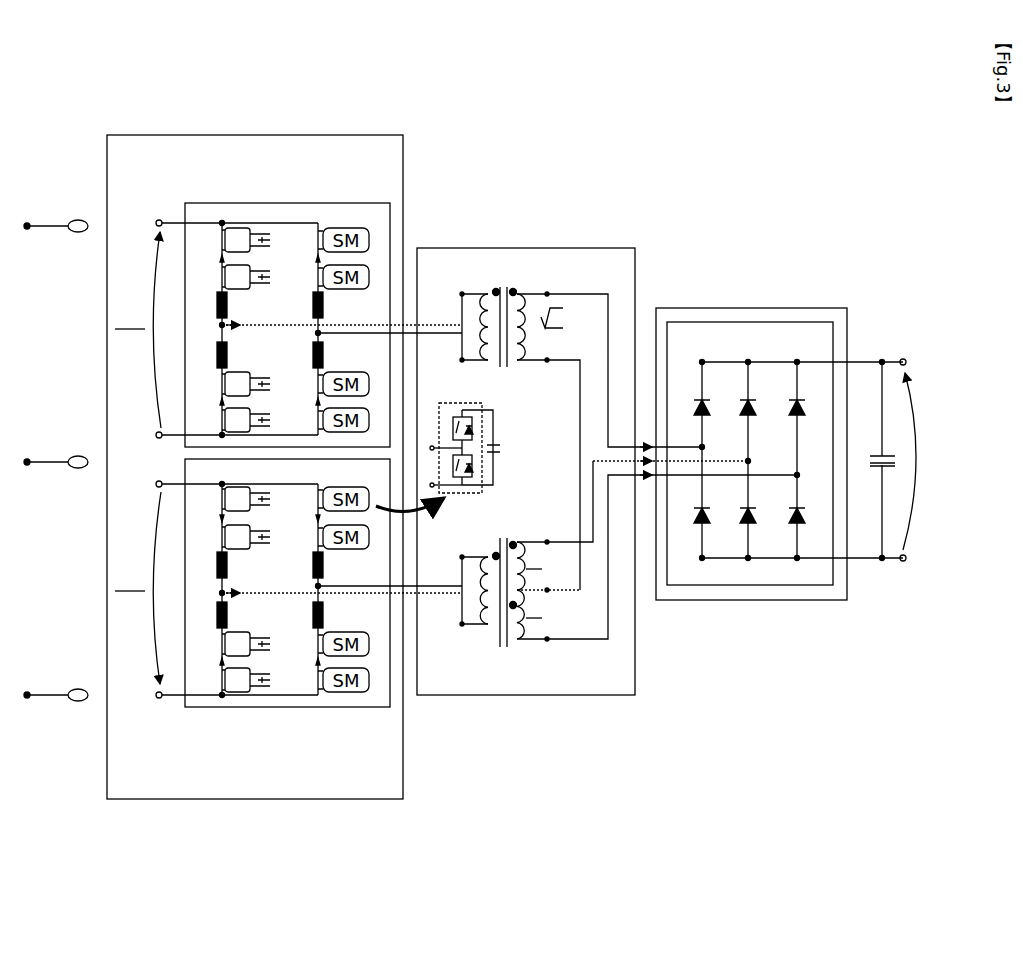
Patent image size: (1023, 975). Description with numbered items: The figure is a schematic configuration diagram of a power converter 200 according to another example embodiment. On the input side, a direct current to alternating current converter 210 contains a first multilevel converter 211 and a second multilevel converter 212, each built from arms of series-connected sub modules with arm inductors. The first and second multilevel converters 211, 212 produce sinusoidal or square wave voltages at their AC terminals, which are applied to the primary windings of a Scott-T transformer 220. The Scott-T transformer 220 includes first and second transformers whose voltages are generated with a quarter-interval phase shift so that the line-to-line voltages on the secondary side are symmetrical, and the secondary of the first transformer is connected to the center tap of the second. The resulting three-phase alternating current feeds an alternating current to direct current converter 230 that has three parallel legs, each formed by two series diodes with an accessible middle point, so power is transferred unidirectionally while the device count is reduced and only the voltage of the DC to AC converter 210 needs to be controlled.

The power converter 200 is at (582, 67).
The direct current (DC) to alternating current (AC) converter 210 is at (253, 135).
The first multilevel converter 211 is at (285, 203).
The second multilevel converter 212 is at (285, 708).
The Scott-T transformer 220 is at (526, 248).
The alternating current (AC) to direct current (DC) converter 230 is at (754, 308).